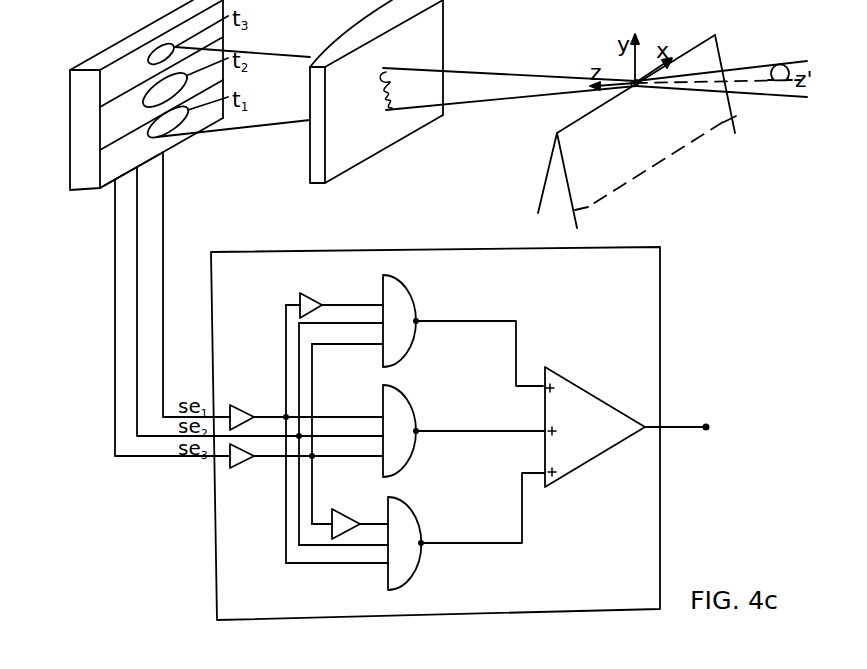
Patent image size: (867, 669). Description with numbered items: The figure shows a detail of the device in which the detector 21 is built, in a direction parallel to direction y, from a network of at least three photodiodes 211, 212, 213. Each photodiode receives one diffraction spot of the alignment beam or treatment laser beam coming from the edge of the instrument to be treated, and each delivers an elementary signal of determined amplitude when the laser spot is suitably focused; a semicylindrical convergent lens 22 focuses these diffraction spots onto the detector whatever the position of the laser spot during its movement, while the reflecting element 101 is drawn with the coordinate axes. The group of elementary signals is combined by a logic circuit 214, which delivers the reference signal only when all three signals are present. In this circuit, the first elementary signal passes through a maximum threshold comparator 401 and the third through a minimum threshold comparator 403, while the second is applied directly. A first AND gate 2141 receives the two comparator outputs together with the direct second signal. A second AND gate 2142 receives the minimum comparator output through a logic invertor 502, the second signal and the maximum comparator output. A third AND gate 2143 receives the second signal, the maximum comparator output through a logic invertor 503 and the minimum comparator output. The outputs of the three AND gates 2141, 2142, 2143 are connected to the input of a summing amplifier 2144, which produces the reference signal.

The detector 21 is at (97, 190).
The photodiode 211 is at (104, 165).
The photodiode 212 is at (104, 128).
The photodiode 213 is at (104, 89).
The semicylindrical convergent lens 22 is at (313, 150).
The tilted mirror 101 is at (548, 164).
The logic circuit 214 is at (217, 586).
The maximum threshold comparator 401 is at (230, 407).
The minimum threshold comparator 403 is at (230, 468).
The logic invertor 502 is at (338, 503).
The logic invertor 503 is at (300, 293).
The AND logic gate 2141 is at (408, 400).
The AND logic gate 2142 is at (407, 504).
The AND logic gate 2143 is at (408, 298).
The summing amplifier 2144 is at (613, 449).